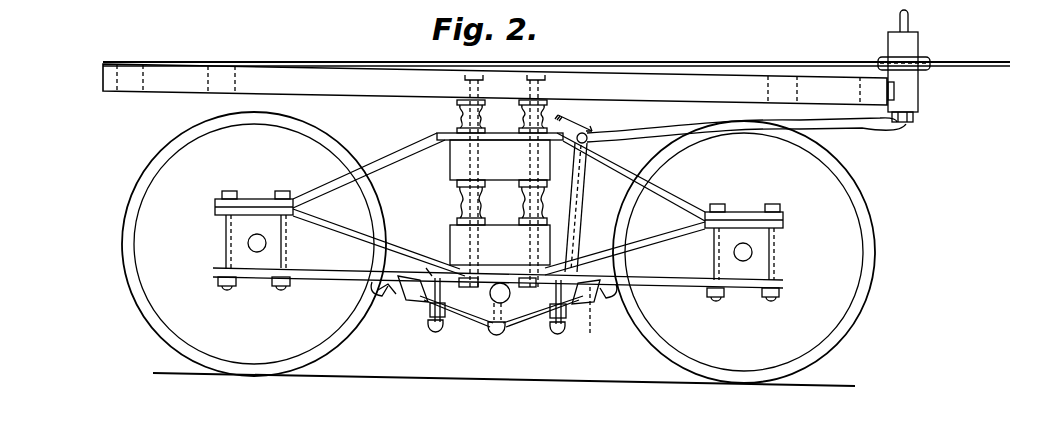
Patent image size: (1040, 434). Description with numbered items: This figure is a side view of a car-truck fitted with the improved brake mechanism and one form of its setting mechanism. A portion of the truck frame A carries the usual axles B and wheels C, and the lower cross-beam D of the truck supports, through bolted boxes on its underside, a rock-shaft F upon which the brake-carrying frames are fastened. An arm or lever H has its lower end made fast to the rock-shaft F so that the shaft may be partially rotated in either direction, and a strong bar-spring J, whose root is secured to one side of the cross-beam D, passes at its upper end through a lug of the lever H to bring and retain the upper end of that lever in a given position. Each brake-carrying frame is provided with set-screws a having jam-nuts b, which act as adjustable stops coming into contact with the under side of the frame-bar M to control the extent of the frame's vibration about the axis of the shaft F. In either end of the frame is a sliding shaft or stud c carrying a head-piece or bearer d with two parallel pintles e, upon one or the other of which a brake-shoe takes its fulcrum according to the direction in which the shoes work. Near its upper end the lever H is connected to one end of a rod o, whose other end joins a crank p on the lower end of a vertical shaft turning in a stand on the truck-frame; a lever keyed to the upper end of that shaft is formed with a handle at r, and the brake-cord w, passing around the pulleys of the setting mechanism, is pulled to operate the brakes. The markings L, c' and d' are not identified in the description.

The frame A is at (495, 177).
The axles B is at (499, 246).
The wheels C is at (498, 247).
The lower cross-beam D is at (499, 193).
The rock-shaft F is at (904, 72).
The arm or lever H is at (574, 167).
The bar-spring J is at (568, 207).
The hanger L is at (500, 275).
The frame-bar M is at (498, 248).
The set-screws a is at (505, 325).
The jam-nuts b is at (497, 301).
The sliding shaft or stud c is at (387, 293).
The safety bar c' is at (501, 315).
The head-piece or bearer d is at (513, 289).
The centre pivot d' is at (502, 293).
The pintles or arbors e is at (494, 275).
The rod o is at (741, 125).
The crank p is at (907, 126).
The handle r is at (909, 17).
The cord w is at (556, 54).